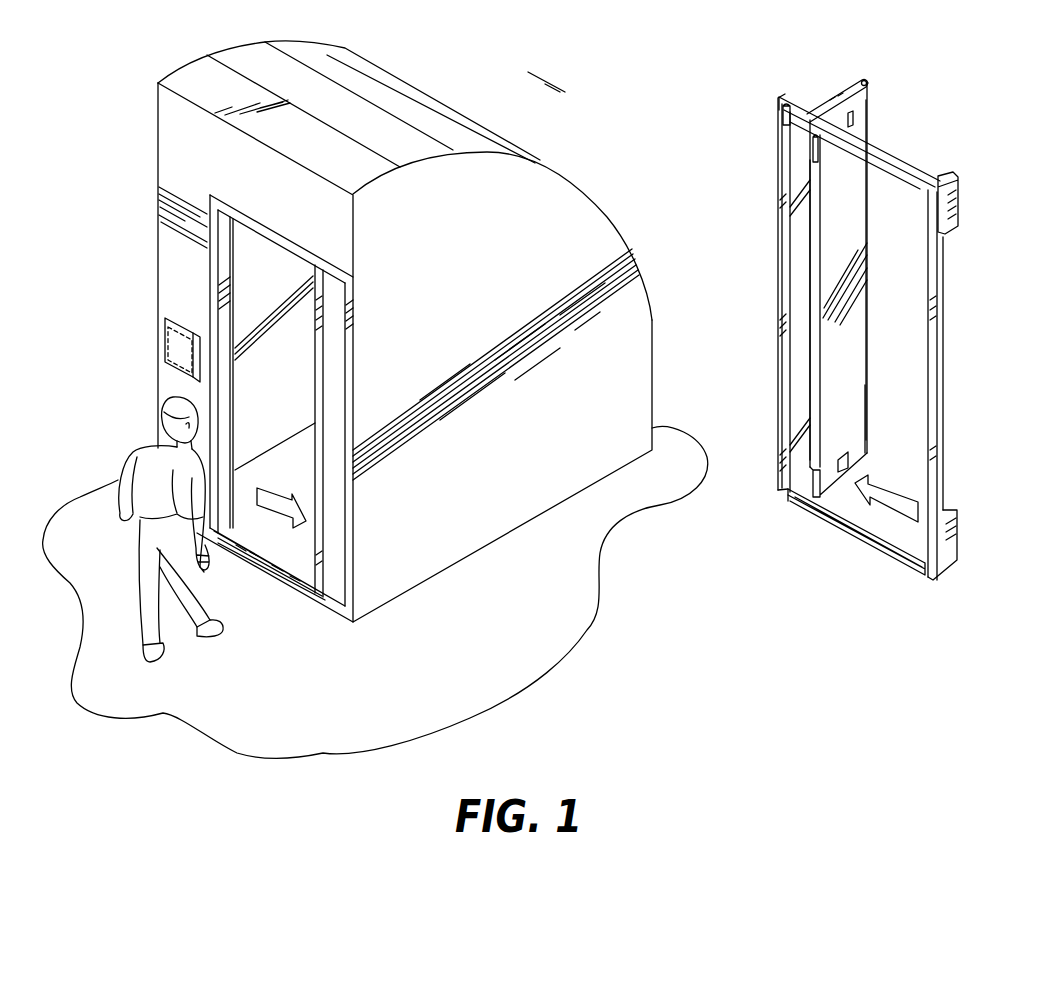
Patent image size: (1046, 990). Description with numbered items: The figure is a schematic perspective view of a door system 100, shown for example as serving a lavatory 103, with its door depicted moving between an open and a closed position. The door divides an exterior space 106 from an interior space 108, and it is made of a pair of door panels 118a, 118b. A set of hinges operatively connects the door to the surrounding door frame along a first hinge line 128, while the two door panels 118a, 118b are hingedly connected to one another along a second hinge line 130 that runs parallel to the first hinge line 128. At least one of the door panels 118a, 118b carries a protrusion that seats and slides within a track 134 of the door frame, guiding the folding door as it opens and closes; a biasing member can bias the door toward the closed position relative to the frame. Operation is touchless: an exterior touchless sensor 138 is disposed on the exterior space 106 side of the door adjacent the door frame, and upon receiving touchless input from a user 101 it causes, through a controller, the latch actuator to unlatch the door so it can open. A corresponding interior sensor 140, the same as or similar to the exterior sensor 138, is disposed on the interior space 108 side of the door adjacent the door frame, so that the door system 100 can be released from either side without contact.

The door system 100 is at (96, 210).
The user 101 is at (130, 448).
The lavatory 103 is at (415, 118).
The exterior space 106 is at (101, 412).
The interior space 108 is at (300, 379).
The door panel 118a is at (807, 367).
The door panel 118b is at (847, 342).
The first hinge line 128 is at (785, 177).
The second hinge line 130 is at (868, 118).
The track 134 is at (865, 528).
The exterior touchless sensor 138 is at (177, 348).
The interior sensor 140 is at (174, 317).